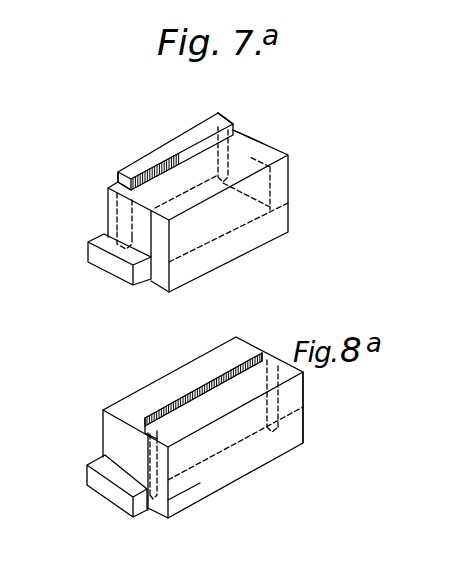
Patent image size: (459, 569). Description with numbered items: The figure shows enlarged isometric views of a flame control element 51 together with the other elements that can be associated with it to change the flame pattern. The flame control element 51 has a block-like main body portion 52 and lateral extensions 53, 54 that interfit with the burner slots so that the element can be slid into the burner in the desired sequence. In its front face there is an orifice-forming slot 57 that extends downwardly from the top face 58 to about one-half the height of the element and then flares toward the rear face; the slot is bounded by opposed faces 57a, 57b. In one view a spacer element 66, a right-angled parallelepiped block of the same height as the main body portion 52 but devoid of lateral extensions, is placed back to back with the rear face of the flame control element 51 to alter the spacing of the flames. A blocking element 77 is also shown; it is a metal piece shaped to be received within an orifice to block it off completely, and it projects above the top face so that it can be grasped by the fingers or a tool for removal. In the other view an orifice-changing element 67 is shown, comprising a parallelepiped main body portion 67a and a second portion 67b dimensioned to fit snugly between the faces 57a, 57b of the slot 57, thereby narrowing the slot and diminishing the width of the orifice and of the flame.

In FIG. 7A, the flame control element 51 is at (100, 215).
In FIG. 8A, the flame control element 51 is at (98, 441).
In FIG. 7A, the main body portion 52 is at (120, 250).
In FIG. 8A, the main body portion 52 is at (250, 338).
In FIG. 8A, the lateral extension 53 is at (306, 407).
In FIG. 7A, the lateral extension 54 is at (133, 289).
In FIG. 8A, the lateral extension 54 is at (112, 495).
In FIG. 7A, the slot 57 is at (185, 156).
In FIG. 8A, the slot 57 is at (183, 396).
In FIG. 7A, the slot face 57a is at (240, 121).
In FIG. 8A, the slot face 57a is at (144, 428).
In FIG. 7A, the slot face 57b is at (108, 191).
In FIG. 8A, the slot face 57b is at (265, 352).
In FIG. 7A, the top face 58 is at (246, 142).
In FIG. 7A, the spacer element 66 is at (296, 167).
In FIG. 8A, the orifice-changing element 67 is at (240, 484).
In FIG. 8A, the main body portion 67a is at (193, 497).
In FIG. 8A, the slot-narrowing portion 67b is at (144, 426).
In FIG. 7A, the blocking element 77 is at (225, 108).